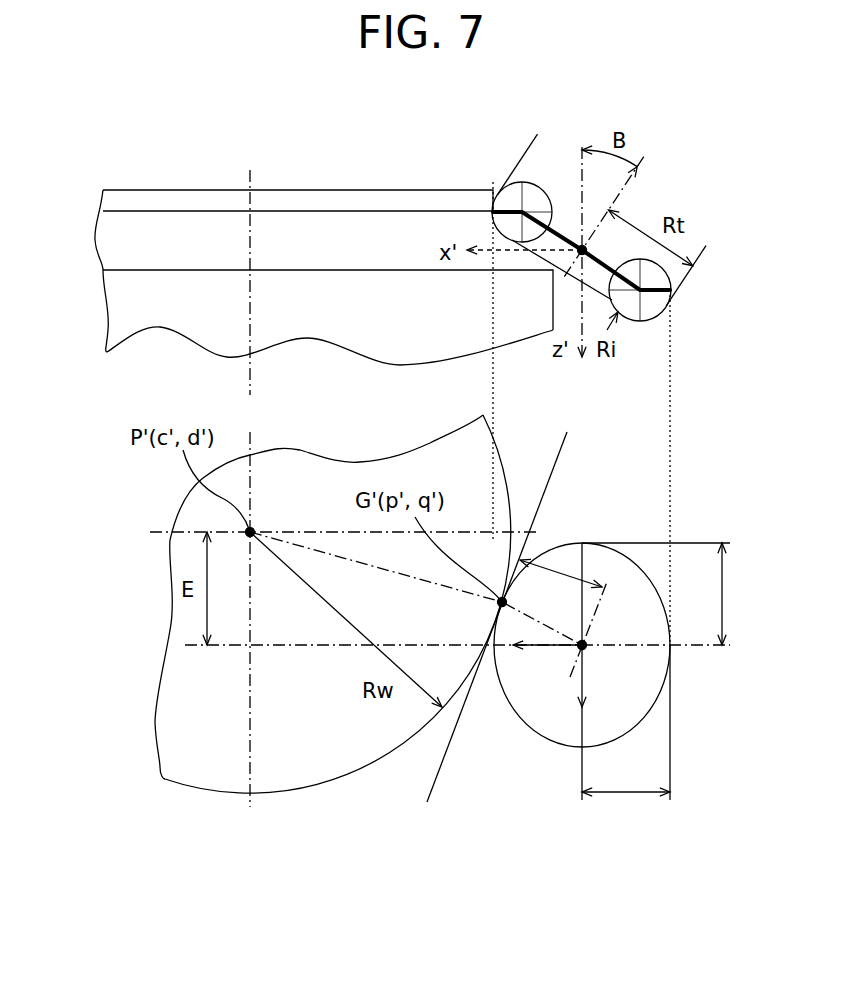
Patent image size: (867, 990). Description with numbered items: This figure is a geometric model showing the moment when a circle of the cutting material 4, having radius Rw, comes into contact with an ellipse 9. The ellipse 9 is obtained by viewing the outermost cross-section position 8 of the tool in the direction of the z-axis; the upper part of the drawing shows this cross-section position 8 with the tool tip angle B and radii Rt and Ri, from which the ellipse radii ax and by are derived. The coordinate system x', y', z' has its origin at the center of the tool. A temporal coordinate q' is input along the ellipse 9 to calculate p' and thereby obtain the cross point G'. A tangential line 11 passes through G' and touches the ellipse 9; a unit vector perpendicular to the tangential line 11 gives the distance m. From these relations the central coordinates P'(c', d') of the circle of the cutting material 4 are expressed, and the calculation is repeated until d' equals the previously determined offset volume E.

The cutting material 4 is at (104, 330).
The outermost cross-section position of the tool 8 is at (561, 234).
The ellipse 9 is at (672, 663).
The tangential line 11 is at (437, 787).